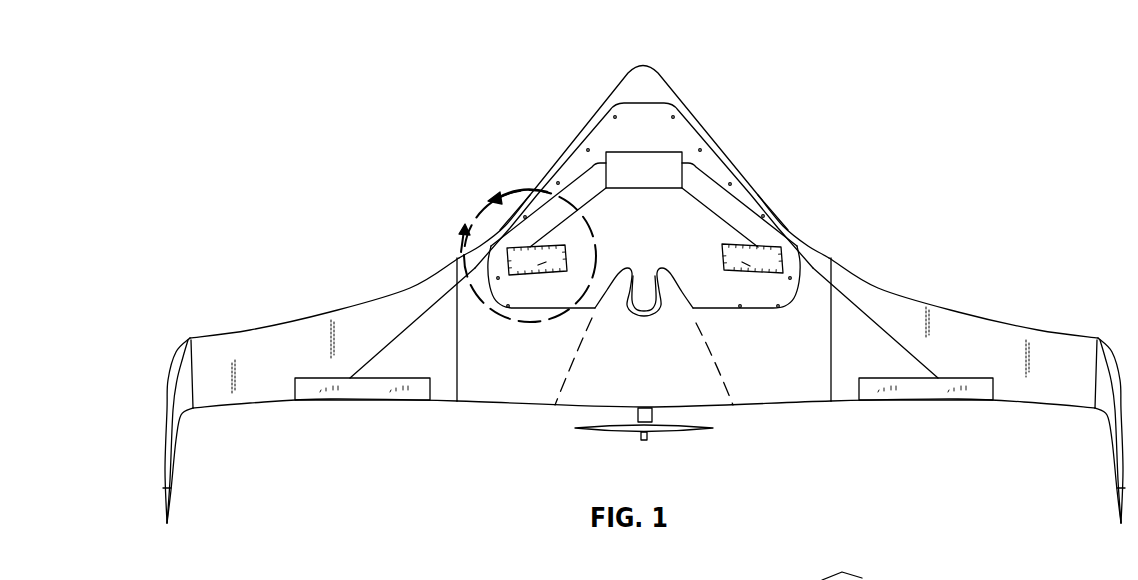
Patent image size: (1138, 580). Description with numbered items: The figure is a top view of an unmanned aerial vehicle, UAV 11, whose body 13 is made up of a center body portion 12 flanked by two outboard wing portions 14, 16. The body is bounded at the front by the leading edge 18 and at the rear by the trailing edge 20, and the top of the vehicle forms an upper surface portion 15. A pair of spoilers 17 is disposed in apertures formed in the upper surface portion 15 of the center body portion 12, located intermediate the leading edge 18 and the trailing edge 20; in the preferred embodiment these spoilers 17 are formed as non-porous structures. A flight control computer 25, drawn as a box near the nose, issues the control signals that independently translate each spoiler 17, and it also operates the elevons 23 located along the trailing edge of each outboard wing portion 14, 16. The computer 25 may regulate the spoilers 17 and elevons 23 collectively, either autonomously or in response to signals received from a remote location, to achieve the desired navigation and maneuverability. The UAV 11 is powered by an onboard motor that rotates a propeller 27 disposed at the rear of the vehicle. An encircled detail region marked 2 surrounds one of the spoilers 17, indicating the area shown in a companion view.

The UAV 11 is at (652, 51).
The center body portion 12 is at (793, 397).
The body 13 is at (783, 218).
The outboard wing portion 14 is at (1032, 400).
The upper surface portion 15 is at (655, 230).
The outboard wing portion 16 is at (250, 403).
The spoilers 17 is at (549, 261).
The leading edge 18 is at (830, 262).
The trailing edge 20 is at (847, 402).
The elevons 23 is at (398, 400).
The flight control computer 25 is at (660, 152).
The propeller 27 is at (663, 432).
The section view indicator 2 is at (527, 256).